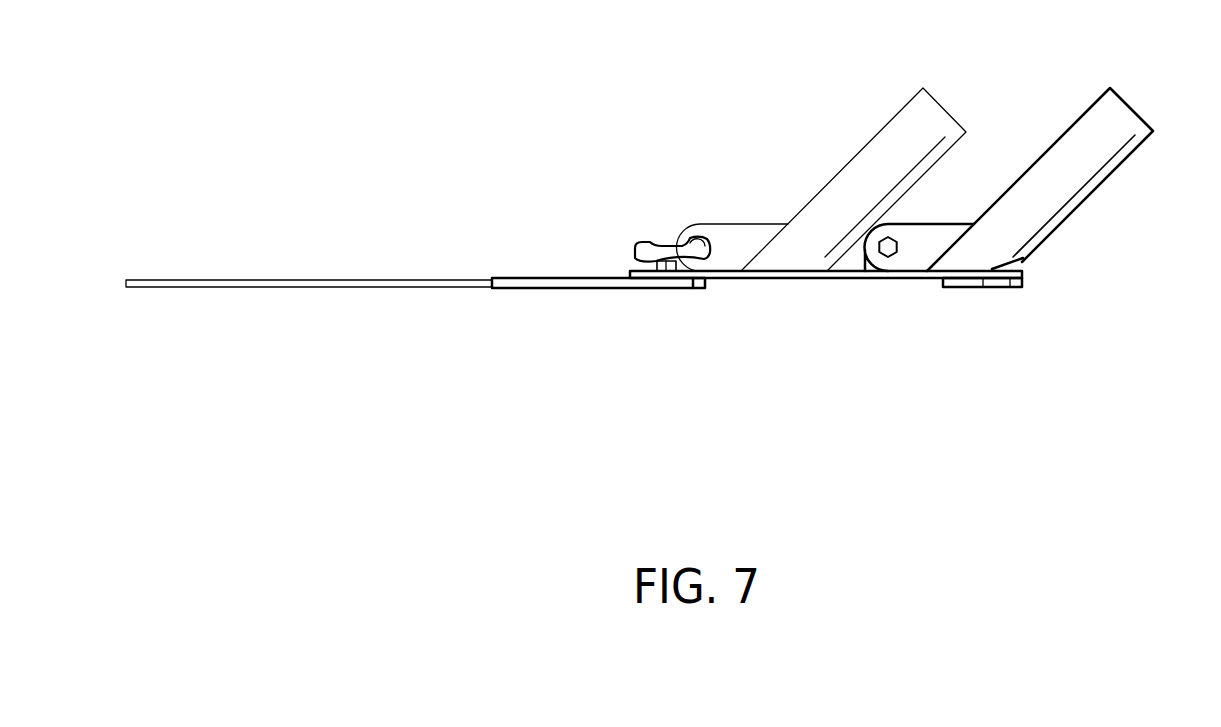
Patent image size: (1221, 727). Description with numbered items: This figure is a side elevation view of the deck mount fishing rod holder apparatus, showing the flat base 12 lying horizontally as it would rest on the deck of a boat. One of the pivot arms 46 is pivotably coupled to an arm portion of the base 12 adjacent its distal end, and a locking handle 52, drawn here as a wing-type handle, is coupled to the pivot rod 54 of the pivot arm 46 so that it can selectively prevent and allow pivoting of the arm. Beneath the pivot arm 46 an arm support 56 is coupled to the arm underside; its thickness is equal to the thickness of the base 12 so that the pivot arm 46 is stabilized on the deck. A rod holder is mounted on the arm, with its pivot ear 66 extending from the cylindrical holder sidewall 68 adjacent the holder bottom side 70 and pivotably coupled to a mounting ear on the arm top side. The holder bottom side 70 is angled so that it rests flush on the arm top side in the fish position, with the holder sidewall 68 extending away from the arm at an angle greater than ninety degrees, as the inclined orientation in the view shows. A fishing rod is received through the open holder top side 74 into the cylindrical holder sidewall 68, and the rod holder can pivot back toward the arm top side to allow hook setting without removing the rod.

The base 12 is at (470, 283).
The pivot arm 46 is at (785, 278).
The locking handle 52 is at (663, 250).
The pivot rod 54 is at (653, 278).
The arm support 56 is at (982, 288).
The pivot ear 66 is at (923, 272).
The cylindrical holder sidewall 68 is at (1057, 198).
The holder bottom side 70 is at (1003, 262).
The open holder top side 74 is at (1069, 165).